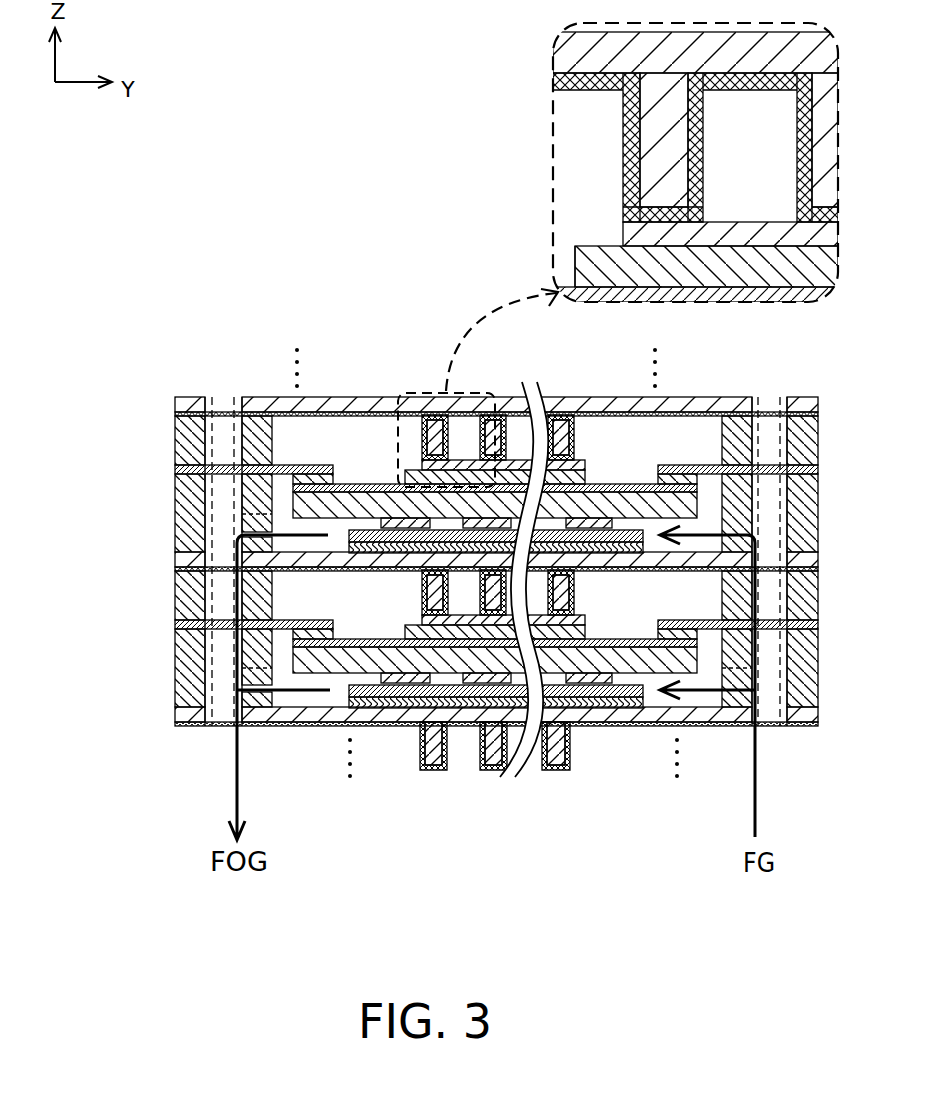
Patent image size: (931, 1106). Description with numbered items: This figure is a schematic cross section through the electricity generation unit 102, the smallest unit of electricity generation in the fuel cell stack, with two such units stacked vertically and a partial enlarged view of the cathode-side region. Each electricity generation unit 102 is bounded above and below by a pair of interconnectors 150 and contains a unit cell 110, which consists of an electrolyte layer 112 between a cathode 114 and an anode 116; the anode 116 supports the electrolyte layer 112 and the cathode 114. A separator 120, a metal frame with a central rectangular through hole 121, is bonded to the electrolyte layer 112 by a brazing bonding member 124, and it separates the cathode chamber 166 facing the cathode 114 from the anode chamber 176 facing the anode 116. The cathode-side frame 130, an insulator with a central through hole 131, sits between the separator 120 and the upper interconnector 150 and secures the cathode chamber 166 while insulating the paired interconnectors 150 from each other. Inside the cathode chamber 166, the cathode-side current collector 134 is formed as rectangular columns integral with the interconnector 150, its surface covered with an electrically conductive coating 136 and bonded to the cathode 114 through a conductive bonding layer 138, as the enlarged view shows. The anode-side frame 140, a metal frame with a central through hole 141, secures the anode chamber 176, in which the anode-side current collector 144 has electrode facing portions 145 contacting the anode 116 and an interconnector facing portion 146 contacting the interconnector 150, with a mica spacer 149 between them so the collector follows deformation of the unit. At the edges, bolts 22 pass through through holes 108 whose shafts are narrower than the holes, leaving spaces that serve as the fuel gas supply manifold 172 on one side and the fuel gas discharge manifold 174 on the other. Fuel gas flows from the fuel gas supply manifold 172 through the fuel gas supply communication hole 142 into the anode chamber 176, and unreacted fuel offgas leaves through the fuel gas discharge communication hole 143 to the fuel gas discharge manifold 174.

The electricity generation unit 102 is at (98, 408).
The through hole 108 is at (205, 725).
The unit cell 110 is at (298, 310).
The electrolyte layer 112 is at (366, 488).
The cathode 114 is at (401, 478).
The anode 116 is at (350, 494).
The separator 120 is at (176, 470).
The through hole 121 is at (335, 625).
The bonding member 124 is at (333, 478).
The cathode-side frame 130 is at (176, 444).
The through hole 131 is at (273, 597).
The cathode-side current collector 134 is at (558, 432).
The coating 136 is at (571, 461).
The bonding layer 138 is at (572, 464).
The anode-side frame 140 is at (176, 527).
The through hole 141 is at (272, 700).
The fuel gas supply communication hole 142 is at (745, 725).
The fuel gas discharge communication hole 143 is at (252, 706).
The anode-side current collector 144 is at (392, 838).
The electrode facing portion 145 is at (441, 726).
The interconnector facing portion 146 is at (483, 726).
The spacer 149 is at (381, 697).
The interconnector 150 is at (177, 409).
The cathode chamber 166 is at (450, 607).
The fuel gas supply manifold 172 is at (833, 821).
The fuel gas discharge manifold 174 is at (205, 829).
The anode chamber 176 is at (646, 692).
The bolt 22 is at (214, 693).